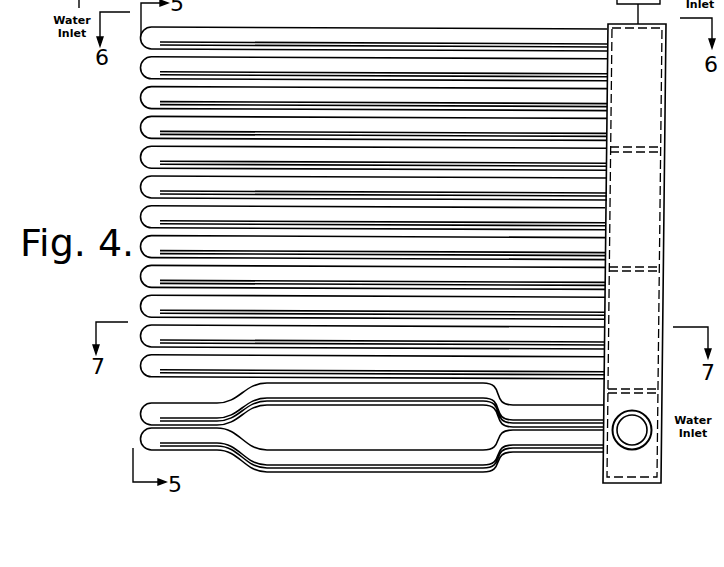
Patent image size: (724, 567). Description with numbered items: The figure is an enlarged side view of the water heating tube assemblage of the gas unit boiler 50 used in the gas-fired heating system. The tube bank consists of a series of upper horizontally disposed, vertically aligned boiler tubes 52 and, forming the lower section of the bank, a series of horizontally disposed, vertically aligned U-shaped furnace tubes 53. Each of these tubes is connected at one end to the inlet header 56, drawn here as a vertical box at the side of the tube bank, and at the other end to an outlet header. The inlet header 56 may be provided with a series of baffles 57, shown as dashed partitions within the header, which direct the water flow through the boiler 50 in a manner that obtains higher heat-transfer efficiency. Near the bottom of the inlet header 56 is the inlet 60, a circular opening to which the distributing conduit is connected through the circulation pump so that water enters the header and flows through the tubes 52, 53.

The gas unit boiler 50 is at (124, 278).
The boiler tubes 52 is at (142, 217).
The U-shaped furnace tubes 53 is at (141, 438).
The inlet header 56 is at (663, 316).
The baffles 57 is at (641, 390).
The inlet 60 is at (651, 437).